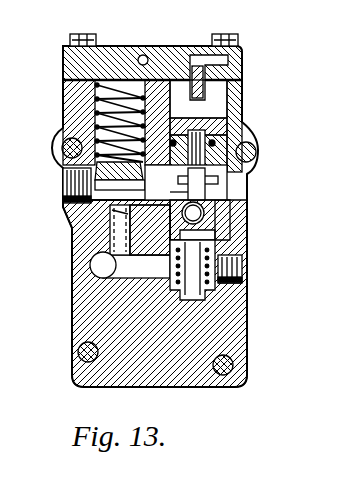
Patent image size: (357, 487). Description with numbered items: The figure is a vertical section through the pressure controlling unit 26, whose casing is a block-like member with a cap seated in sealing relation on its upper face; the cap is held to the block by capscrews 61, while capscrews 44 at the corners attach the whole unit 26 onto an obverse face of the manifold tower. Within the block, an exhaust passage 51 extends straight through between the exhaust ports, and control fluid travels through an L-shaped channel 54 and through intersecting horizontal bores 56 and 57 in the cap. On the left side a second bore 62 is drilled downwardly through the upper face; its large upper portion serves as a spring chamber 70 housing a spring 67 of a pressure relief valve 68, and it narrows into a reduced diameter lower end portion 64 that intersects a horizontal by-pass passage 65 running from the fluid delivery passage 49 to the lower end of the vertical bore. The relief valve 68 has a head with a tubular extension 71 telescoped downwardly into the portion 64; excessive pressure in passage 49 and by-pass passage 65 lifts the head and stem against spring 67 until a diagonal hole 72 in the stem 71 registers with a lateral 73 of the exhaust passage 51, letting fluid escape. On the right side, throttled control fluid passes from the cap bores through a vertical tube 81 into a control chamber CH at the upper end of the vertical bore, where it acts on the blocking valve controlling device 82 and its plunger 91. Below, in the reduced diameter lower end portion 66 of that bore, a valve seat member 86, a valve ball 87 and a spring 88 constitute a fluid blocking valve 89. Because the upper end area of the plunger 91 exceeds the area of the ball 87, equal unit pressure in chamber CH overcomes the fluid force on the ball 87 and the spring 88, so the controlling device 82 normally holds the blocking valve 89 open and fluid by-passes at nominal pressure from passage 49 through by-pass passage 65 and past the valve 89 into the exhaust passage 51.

The pressure controlling unit 26 is at (253, 59).
The horizontal bore 56 is at (222, 60).
The horizontal bore 57 is at (141, 55).
The capscrews 61 is at (82, 33).
The vertical tube 81 is at (205, 77).
The control chamber CH is at (215, 92).
The controlling device plunger 91 is at (220, 126).
The blocking valve controlling device 82 is at (215, 136).
The spring 67 is at (96, 88).
The second bore 62 is at (96, 118).
The spring chamber 70 is at (62, 174).
The capscrews 44 is at (62, 150).
The by-pass passage 65 is at (150, 279).
The pressure relief valve 68 is at (97, 201).
The diagonal hole 72 is at (126, 216).
The reduced diameter lower end portion 64 is at (118, 236).
The lateral 73 is at (150, 230).
The tubular extension 71 is at (98, 266).
The fluid delivery passage 49 is at (71, 303).
The L-shaped channel 54 is at (216, 181).
The exhaust passage 51 is at (205, 193).
The valve seat member 86 is at (222, 214).
The fluid blocking valve 89 is at (204, 220).
The valve ball 87 is at (228, 256).
The reduced diameter lower end portion 66 is at (232, 284).
The spring 88 is at (172, 300).